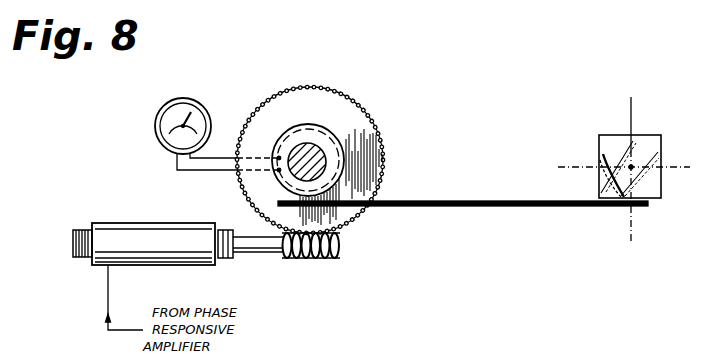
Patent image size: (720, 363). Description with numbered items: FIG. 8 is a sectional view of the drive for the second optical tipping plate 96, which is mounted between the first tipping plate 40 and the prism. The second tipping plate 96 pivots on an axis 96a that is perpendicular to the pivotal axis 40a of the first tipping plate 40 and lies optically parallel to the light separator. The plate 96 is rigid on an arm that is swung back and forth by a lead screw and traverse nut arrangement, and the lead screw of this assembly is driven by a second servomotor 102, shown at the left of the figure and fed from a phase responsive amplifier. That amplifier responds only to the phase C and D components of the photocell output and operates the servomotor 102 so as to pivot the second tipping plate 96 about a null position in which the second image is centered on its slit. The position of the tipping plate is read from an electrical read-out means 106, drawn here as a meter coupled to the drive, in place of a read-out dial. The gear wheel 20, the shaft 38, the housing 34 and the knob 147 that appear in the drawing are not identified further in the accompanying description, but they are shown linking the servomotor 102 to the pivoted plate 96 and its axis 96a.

The electrical read-out means 106 is at (197, 107).
The driven gear wheel 20 is at (347, 162).
The shaft 38 is at (481, 201).
The mirror housing 34 is at (646, 160).
The tipping plate 40 is at (602, 180).
The pivotal axis 40a is at (592, 146).
The second optical tipping plate 96 is at (656, 178).
The axis 96a is at (633, 122).
The second servomotor 102 is at (175, 206).
The adjusting knob 147 is at (73, 242).